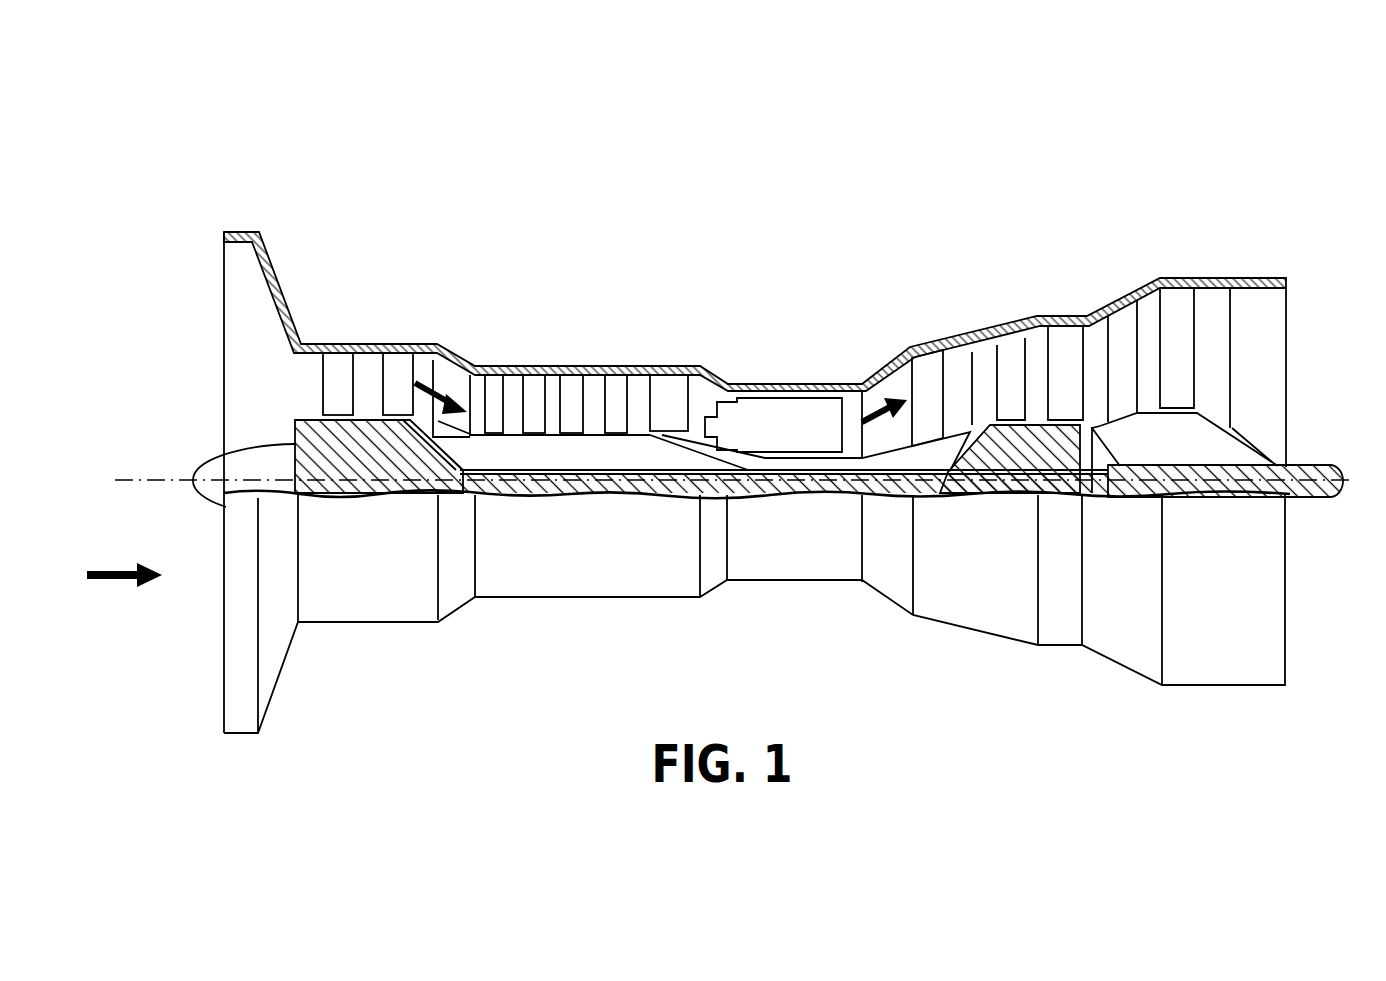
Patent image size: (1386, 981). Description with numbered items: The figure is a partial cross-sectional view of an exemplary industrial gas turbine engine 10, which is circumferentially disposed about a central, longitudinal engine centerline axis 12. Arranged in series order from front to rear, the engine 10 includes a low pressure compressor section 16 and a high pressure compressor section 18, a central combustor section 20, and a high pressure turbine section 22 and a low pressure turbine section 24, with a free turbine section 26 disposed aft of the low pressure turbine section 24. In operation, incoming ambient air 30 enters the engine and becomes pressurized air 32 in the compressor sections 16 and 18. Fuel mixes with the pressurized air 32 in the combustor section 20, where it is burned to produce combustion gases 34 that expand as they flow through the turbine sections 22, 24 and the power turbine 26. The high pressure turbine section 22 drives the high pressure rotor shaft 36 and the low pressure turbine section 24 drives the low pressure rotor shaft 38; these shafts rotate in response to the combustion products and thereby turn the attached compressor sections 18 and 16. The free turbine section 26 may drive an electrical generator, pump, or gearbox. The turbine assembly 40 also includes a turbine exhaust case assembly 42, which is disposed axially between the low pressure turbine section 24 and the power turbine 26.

The industrial gas turbine engine 10 is at (858, 230).
The engine centerline axis 12 is at (160, 478).
The low pressure compressor section 16 is at (360, 330).
The high pressure compressor section 18 is at (608, 340).
The combustor section 20 is at (767, 422).
The high pressure turbine section 22 is at (955, 312).
The low pressure turbine section 24 is at (1038, 302).
The free turbine section 26 is at (1224, 275).
The incoming ambient air 30 is at (120, 567).
The pressurized air 32 is at (443, 388).
The combustion gases 34 is at (872, 408).
The high pressure rotor shaft 36 is at (680, 443).
The low pressure rotor shaft 38 is at (455, 462).
The turbine assembly 40 is at (1108, 285).
The turbine exhaust case assembly 42 is at (1040, 650).